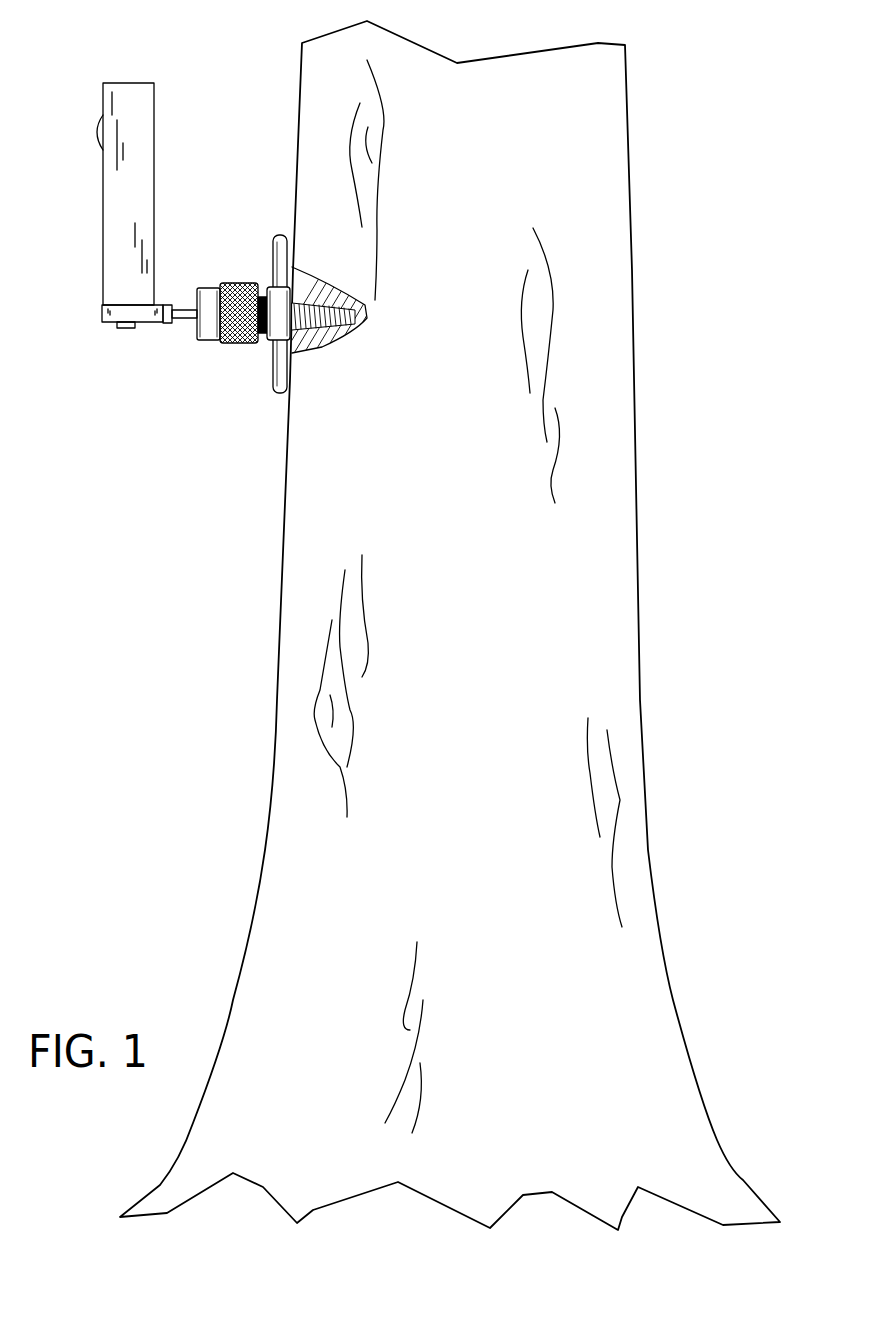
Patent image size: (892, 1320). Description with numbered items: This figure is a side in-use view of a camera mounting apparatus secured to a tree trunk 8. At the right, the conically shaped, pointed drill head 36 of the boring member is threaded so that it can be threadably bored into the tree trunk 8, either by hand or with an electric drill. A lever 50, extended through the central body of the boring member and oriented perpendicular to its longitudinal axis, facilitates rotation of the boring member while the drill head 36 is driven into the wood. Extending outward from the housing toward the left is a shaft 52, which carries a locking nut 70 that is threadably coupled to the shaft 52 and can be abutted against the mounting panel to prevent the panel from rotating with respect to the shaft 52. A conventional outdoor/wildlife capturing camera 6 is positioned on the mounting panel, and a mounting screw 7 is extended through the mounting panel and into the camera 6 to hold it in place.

The camera 6 is at (150, 138).
The mounting screw 7 is at (125, 328).
The tree trunk 8 is at (618, 570).
The drill head 36 is at (320, 285).
The lever 50 is at (273, 393).
The shaft 52 is at (182, 318).
The locking nut 70 is at (162, 305).